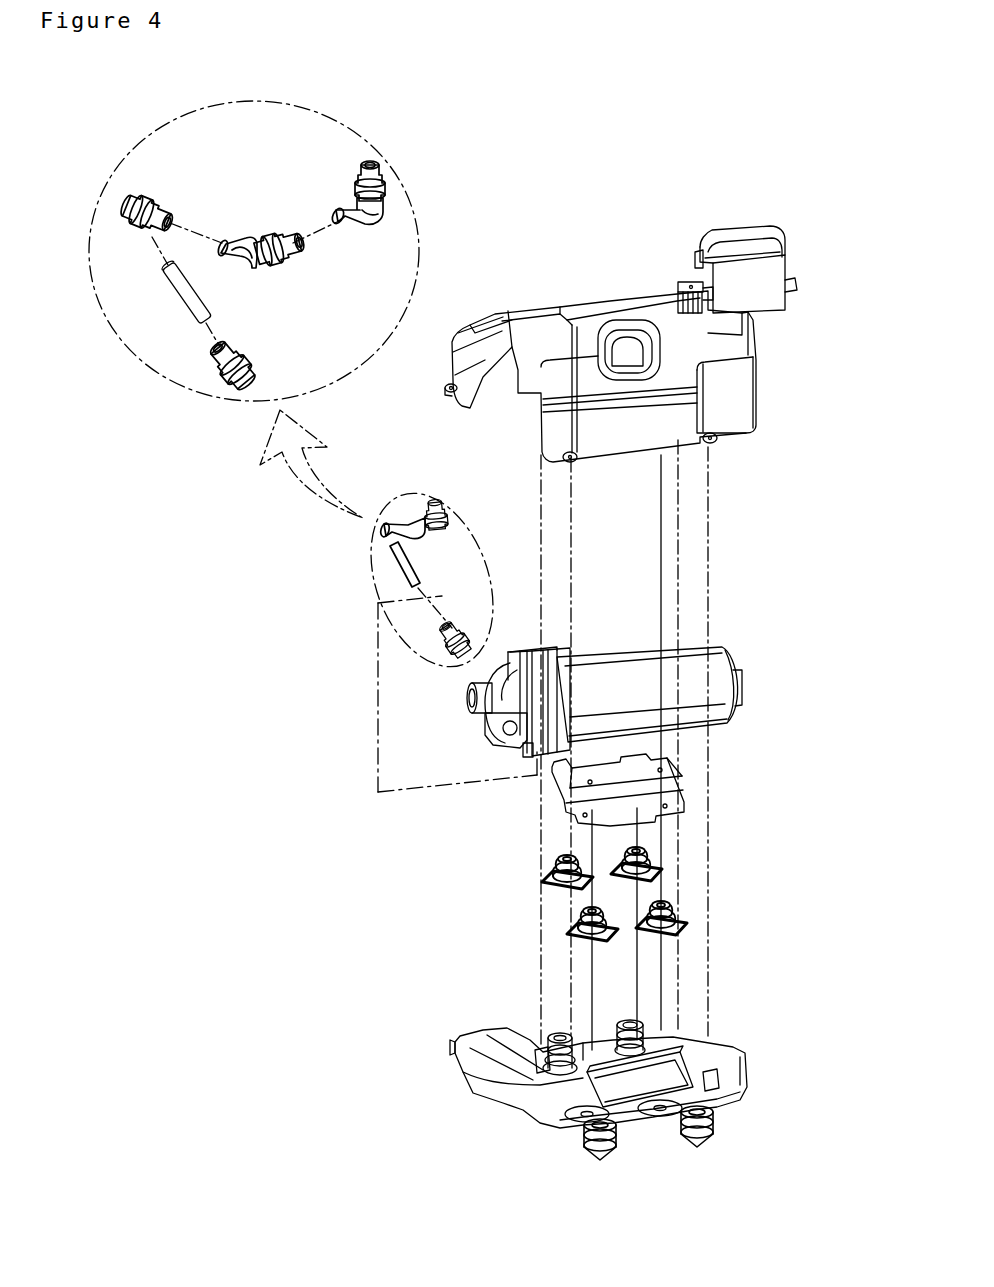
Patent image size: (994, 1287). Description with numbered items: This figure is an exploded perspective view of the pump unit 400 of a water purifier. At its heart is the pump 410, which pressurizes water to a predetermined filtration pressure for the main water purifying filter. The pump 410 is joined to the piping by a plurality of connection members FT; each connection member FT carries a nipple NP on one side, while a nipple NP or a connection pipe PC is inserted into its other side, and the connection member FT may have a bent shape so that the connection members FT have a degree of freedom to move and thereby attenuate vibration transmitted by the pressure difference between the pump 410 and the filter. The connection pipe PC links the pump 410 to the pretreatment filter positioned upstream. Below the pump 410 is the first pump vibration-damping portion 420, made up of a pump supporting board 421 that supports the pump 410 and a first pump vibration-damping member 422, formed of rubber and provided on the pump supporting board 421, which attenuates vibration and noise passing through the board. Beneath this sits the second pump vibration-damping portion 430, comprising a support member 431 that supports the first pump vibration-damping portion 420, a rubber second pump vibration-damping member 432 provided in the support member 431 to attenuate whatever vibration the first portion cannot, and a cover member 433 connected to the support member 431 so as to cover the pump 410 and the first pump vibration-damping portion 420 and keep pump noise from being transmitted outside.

The pump unit 400 is at (572, 94).
The pump 410 is at (732, 653).
The first pump vibration-damping portion 420 is at (843, 812).
The pump supporting board 421 is at (685, 808).
The first pump vibration-damping member 422 is at (683, 930).
The second pump vibration-damping portion 430 is at (457, 1102).
The support member 431 is at (740, 1092).
The second pump vibration-damping member 432 is at (713, 1145).
The cover member 433 is at (732, 393).
The connection member FT is at (140, 197).
The nipple NP is at (363, 222).
The connection pipe PC is at (180, 292).